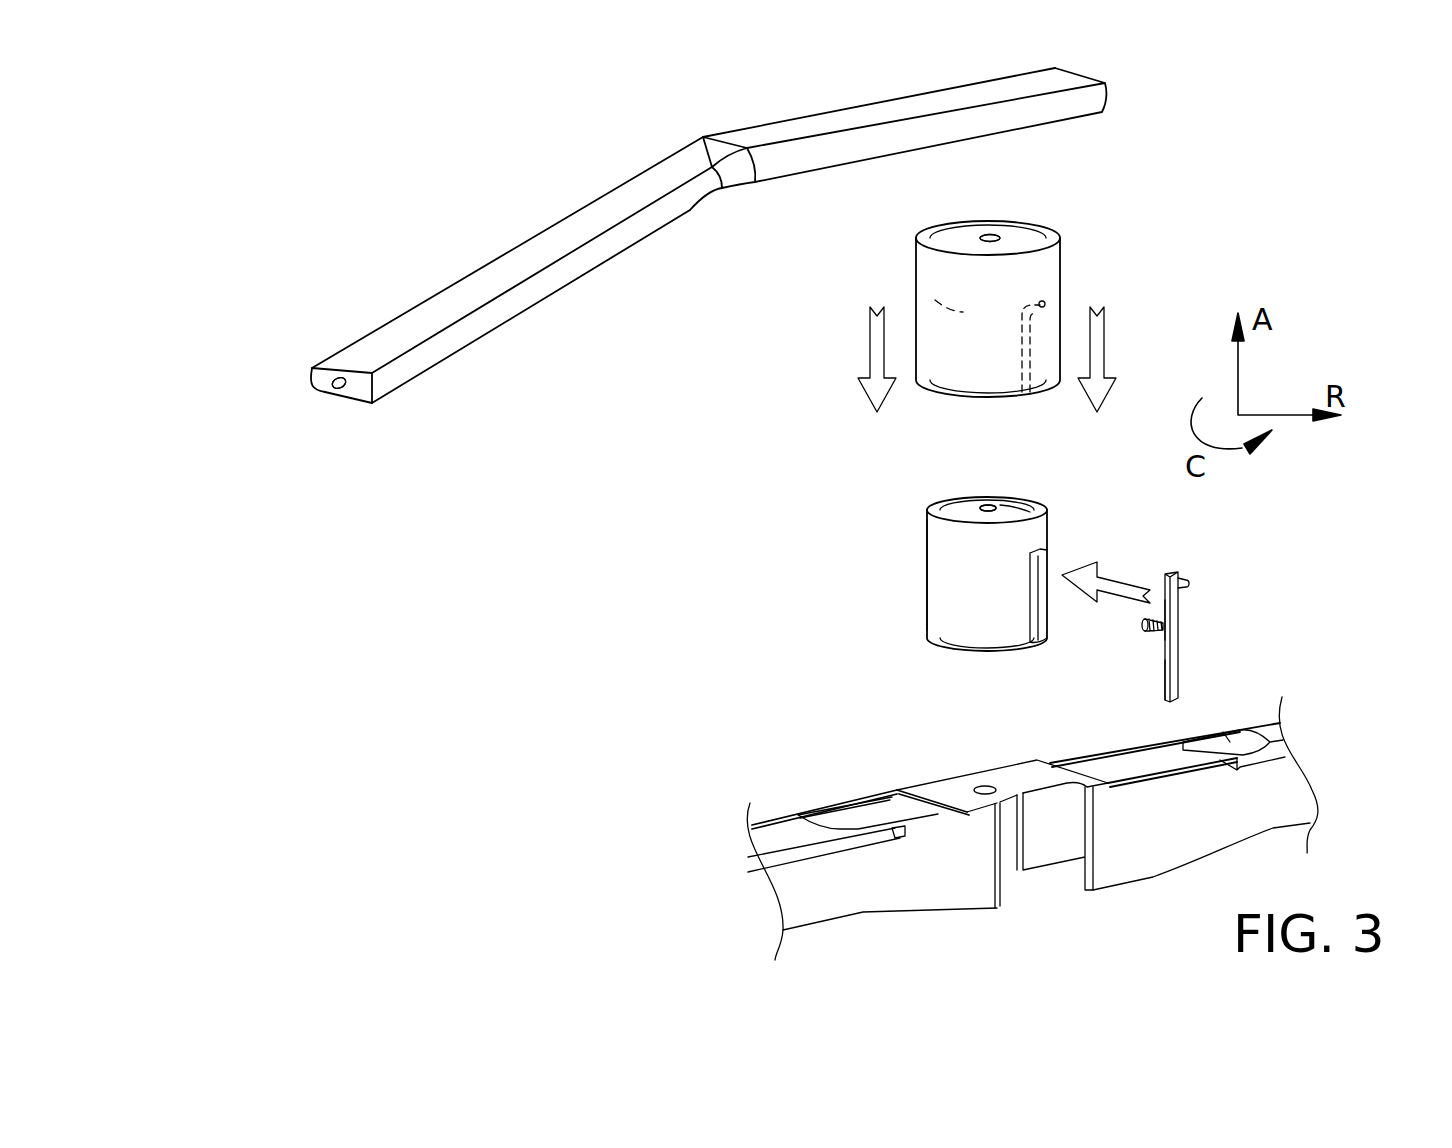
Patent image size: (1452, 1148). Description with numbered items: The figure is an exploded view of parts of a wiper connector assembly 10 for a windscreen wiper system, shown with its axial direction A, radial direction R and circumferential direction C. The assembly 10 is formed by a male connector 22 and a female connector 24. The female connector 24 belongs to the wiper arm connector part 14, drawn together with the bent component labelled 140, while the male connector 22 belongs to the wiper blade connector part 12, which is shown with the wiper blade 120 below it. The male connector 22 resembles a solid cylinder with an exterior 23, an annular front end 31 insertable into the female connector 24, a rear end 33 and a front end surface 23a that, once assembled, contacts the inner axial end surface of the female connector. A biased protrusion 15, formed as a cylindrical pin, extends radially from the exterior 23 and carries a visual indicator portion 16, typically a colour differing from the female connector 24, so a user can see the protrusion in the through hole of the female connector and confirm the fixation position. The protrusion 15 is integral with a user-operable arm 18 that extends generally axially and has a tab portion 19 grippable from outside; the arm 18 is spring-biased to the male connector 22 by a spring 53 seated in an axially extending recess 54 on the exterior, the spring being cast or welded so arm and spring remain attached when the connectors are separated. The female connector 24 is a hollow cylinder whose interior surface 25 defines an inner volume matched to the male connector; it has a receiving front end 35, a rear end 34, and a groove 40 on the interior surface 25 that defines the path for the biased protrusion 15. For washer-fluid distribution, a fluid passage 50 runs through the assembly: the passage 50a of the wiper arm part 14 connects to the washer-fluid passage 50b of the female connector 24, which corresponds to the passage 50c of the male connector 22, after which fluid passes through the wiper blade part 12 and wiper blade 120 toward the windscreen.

The wiper connector assembly 10 is at (1190, 219).
The wiper blade connector part 12 is at (1032, 687).
The wiper blade 120 is at (905, 875).
The wiper arm connector part 14 is at (672, 261).
The bent bar of second component 140 is at (854, 120).
The male connector 22 is at (973, 568).
The exterior 23 is at (973, 602).
The front end surface 23a is at (958, 510).
The female connector 24 is at (963, 283).
The interior surface 25 is at (963, 312).
The front end 31 is at (1010, 512).
The rear end 33 is at (963, 650).
The rear end 34 is at (955, 238).
The front end 35 is at (940, 393).
The groove 40 is at (1028, 330).
The fluid passage 50 is at (665, 373).
The passage 50a is at (339, 386).
The washerfluid passage 50b is at (990, 232).
The washerfluid passage 50c is at (990, 505).
The spring 53 is at (1150, 635).
The recess 54 is at (1035, 608).
The biased protrusion 15 is at (1188, 581).
The visual indicator portion 16 is at (1177, 637).
The user-operable arm 18 is at (1175, 633).
The tab portion 19 is at (1175, 688).